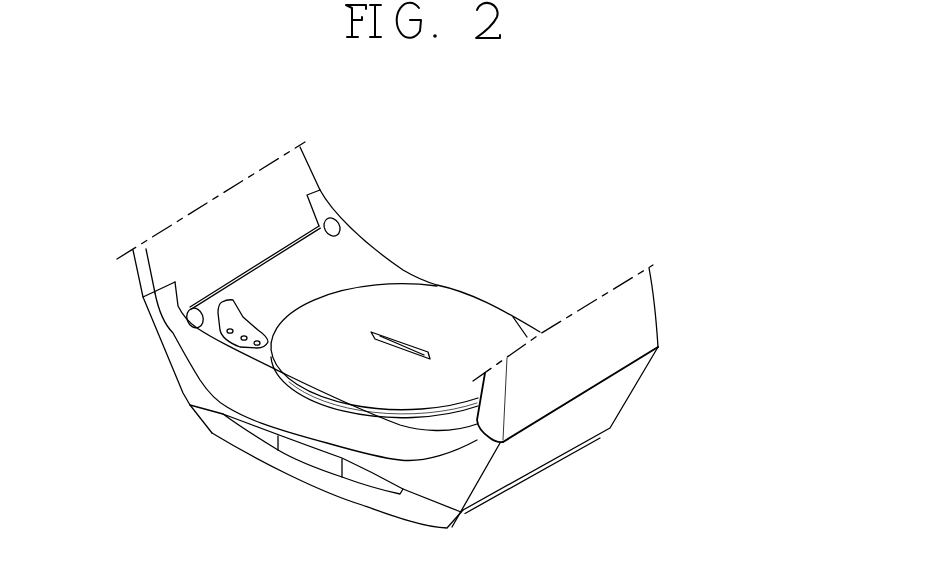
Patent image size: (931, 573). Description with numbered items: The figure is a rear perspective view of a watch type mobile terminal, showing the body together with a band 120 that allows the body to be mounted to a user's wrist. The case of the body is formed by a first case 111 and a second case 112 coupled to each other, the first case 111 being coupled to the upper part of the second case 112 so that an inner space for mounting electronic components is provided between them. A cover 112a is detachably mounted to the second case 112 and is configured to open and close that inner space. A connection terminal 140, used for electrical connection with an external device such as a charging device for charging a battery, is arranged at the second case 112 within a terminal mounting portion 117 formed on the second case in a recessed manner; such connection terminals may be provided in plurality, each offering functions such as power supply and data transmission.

The first case 111 is at (198, 383).
The second case 112 is at (367, 263).
The cover 112a is at (425, 305).
The terminal mounting portion 117 is at (226, 311).
The band 120 is at (667, 306).
The connection terminal 140 is at (244, 328).